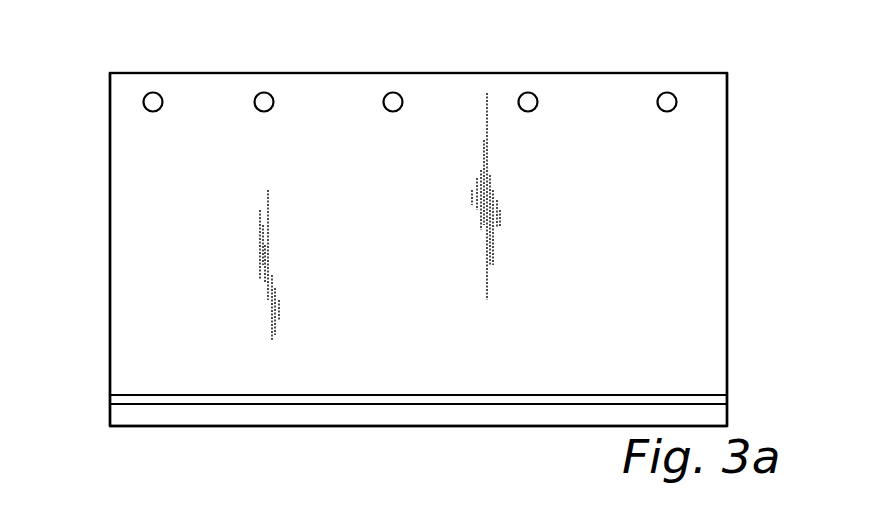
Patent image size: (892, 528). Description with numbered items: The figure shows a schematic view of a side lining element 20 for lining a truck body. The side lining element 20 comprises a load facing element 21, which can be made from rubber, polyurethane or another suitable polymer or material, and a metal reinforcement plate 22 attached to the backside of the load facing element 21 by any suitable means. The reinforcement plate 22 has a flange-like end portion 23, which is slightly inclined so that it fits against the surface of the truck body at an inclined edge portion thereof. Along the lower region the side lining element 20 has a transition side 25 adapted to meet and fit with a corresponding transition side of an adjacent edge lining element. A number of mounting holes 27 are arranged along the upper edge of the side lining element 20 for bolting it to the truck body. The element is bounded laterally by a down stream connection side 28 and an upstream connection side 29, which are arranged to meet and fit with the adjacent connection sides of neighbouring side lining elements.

The side lining element 20 is at (764, 121).
The load facing element 21 is at (695, 207).
The metal reinforcement plate 22 is at (722, 415).
The flange-like end portion 23 is at (523, 426).
The transition side 25 is at (312, 395).
The mounting holes 27 is at (393, 101).
The down stream connection side 28 is at (110, 332).
The upstream connection side 29 is at (727, 263).